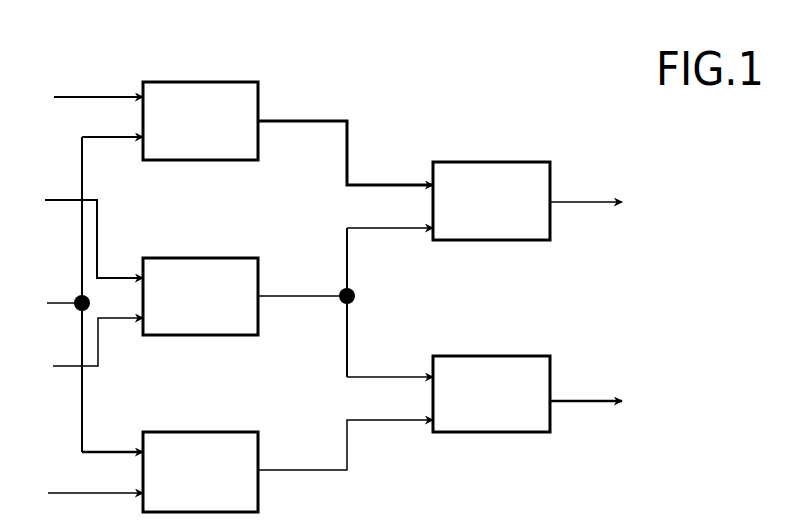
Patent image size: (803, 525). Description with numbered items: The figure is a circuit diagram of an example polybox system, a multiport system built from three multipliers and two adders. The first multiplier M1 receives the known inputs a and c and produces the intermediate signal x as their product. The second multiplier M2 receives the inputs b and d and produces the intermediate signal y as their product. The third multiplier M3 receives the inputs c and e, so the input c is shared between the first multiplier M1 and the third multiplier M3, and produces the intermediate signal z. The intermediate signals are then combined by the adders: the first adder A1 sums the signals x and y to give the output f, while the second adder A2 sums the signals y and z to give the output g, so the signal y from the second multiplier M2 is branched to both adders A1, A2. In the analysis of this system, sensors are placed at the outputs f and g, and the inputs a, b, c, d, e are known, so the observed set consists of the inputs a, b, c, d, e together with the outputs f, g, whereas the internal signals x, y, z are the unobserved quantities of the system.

The first multiplier M1 is at (225, 89).
The second multiplier M2 is at (232, 267).
The third multiplier M3 is at (217, 438).
The first adder A1 is at (520, 166).
The second adder A2 is at (521, 361).
The input a is at (83, 97).
The input b is at (84, 232).
The input c is at (85, 294).
The input d is at (84, 349).
The input e is at (83, 493).
The intermediate signal x is at (345, 137).
The intermediate signal y is at (345, 302).
The intermediate signal z is at (345, 445).
The output f is at (595, 204).
The output g is at (597, 398).